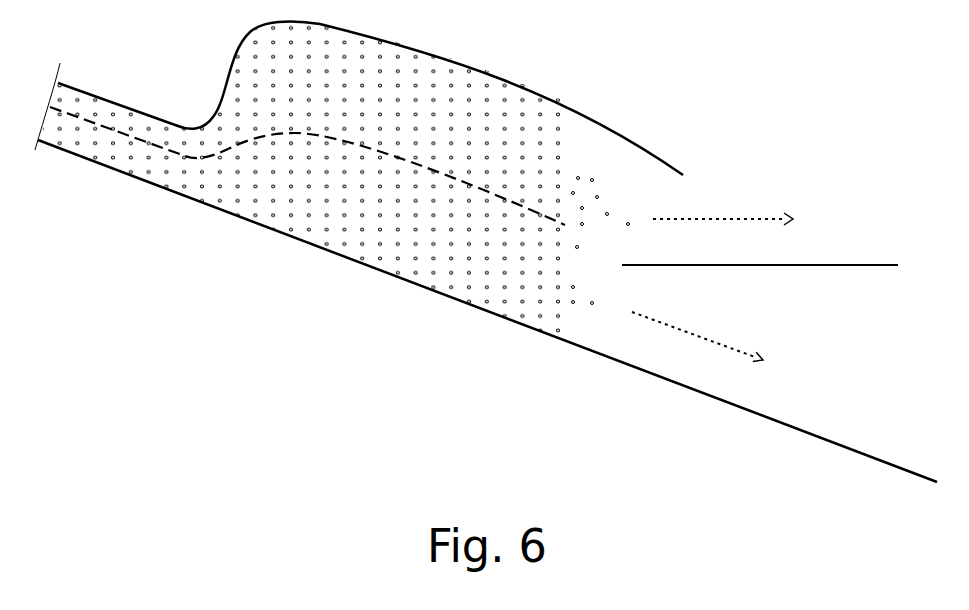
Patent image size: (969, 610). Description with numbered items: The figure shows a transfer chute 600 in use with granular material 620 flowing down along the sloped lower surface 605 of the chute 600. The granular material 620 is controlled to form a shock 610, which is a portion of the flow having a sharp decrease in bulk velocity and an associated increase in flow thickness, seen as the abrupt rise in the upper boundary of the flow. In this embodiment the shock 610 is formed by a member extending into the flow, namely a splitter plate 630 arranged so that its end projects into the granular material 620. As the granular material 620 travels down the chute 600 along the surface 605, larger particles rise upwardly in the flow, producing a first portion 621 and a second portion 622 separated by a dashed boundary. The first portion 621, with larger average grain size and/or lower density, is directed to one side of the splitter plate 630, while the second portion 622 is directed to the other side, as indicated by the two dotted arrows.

The transfer chute 600 is at (508, 99).
The lower wall surface 605 is at (600, 355).
The shock 610 is at (200, 128).
The granular material 620 is at (275, 202).
The first portion of the granular material 621 is at (421, 160).
The second portion of the granular material 622 is at (575, 287).
The splitter plate 630 is at (815, 265).